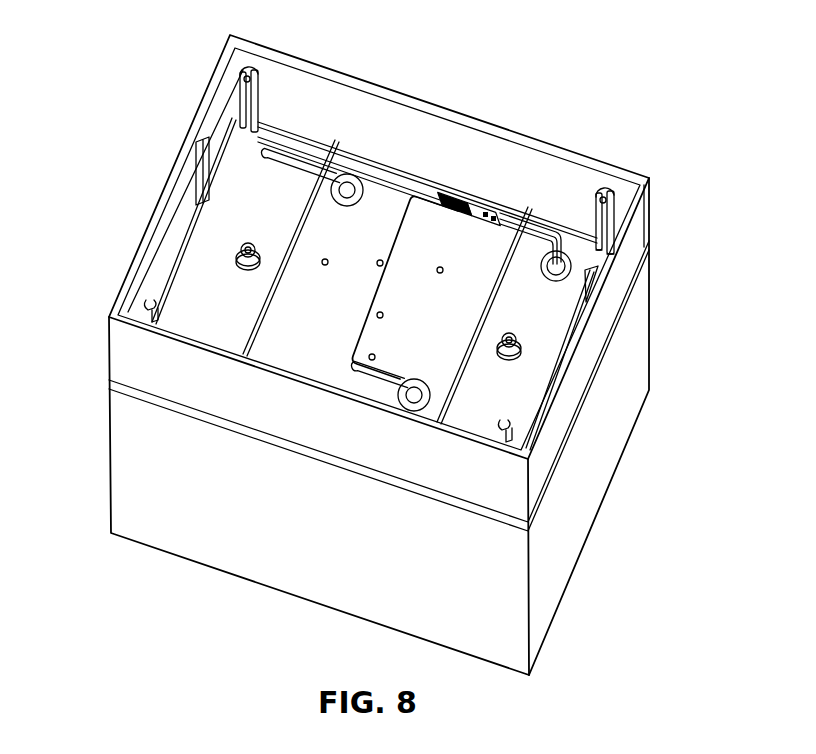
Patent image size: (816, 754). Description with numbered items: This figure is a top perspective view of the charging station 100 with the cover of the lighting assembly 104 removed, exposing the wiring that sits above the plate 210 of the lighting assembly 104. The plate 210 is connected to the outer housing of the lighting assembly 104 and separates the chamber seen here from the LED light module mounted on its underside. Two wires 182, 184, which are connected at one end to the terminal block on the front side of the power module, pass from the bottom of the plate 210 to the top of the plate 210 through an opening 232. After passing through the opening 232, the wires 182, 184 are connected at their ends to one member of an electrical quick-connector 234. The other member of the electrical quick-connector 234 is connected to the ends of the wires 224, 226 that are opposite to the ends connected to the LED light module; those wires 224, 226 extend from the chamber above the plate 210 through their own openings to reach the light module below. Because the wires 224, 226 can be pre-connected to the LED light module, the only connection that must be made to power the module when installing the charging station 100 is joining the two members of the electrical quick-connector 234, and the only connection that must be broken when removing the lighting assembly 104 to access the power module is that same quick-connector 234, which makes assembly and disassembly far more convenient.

The charging station 100 is at (113, 37).
The lighting assembly 104 is at (190, 124).
The plate 210 is at (292, 337).
The wire 224 is at (348, 172).
The wire 226 is at (392, 272).
The electrical quick-connector 234 is at (470, 198).
The wire 182 is at (512, 243).
The opening 232 is at (572, 264).
The wire 184 is at (503, 268).